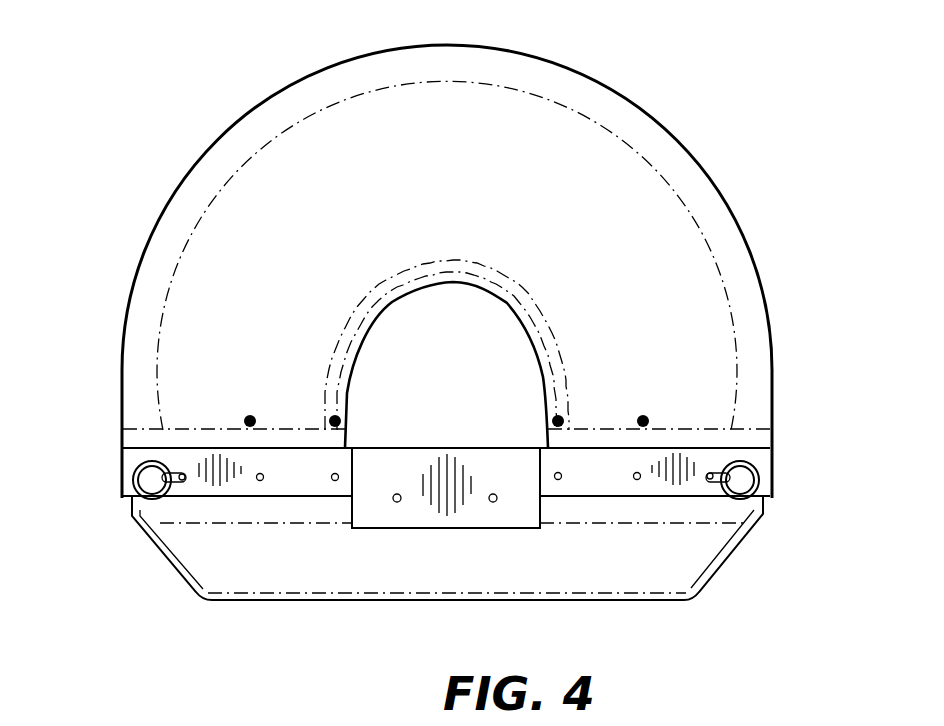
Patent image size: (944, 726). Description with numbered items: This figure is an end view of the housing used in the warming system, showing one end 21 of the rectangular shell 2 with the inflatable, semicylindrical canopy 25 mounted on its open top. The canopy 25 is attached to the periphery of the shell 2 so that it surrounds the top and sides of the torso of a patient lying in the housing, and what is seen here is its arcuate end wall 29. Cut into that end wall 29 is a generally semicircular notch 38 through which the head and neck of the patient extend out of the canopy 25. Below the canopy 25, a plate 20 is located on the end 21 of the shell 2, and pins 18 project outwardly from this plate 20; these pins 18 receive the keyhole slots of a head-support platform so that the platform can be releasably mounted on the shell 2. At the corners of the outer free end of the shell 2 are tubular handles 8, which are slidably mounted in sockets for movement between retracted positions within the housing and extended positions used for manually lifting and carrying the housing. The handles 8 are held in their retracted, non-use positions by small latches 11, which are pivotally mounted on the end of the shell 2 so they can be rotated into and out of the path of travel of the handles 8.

The canopy 25 is at (678, 85).
The end wall 29 is at (432, 159).
The notch 38 is at (484, 292).
The pins 18 is at (493, 494).
The plate 20 is at (450, 517).
The end 21 is at (287, 510).
The shell 2 is at (735, 547).
The tubular handles 8 is at (138, 497).
The latches 11 is at (180, 488).